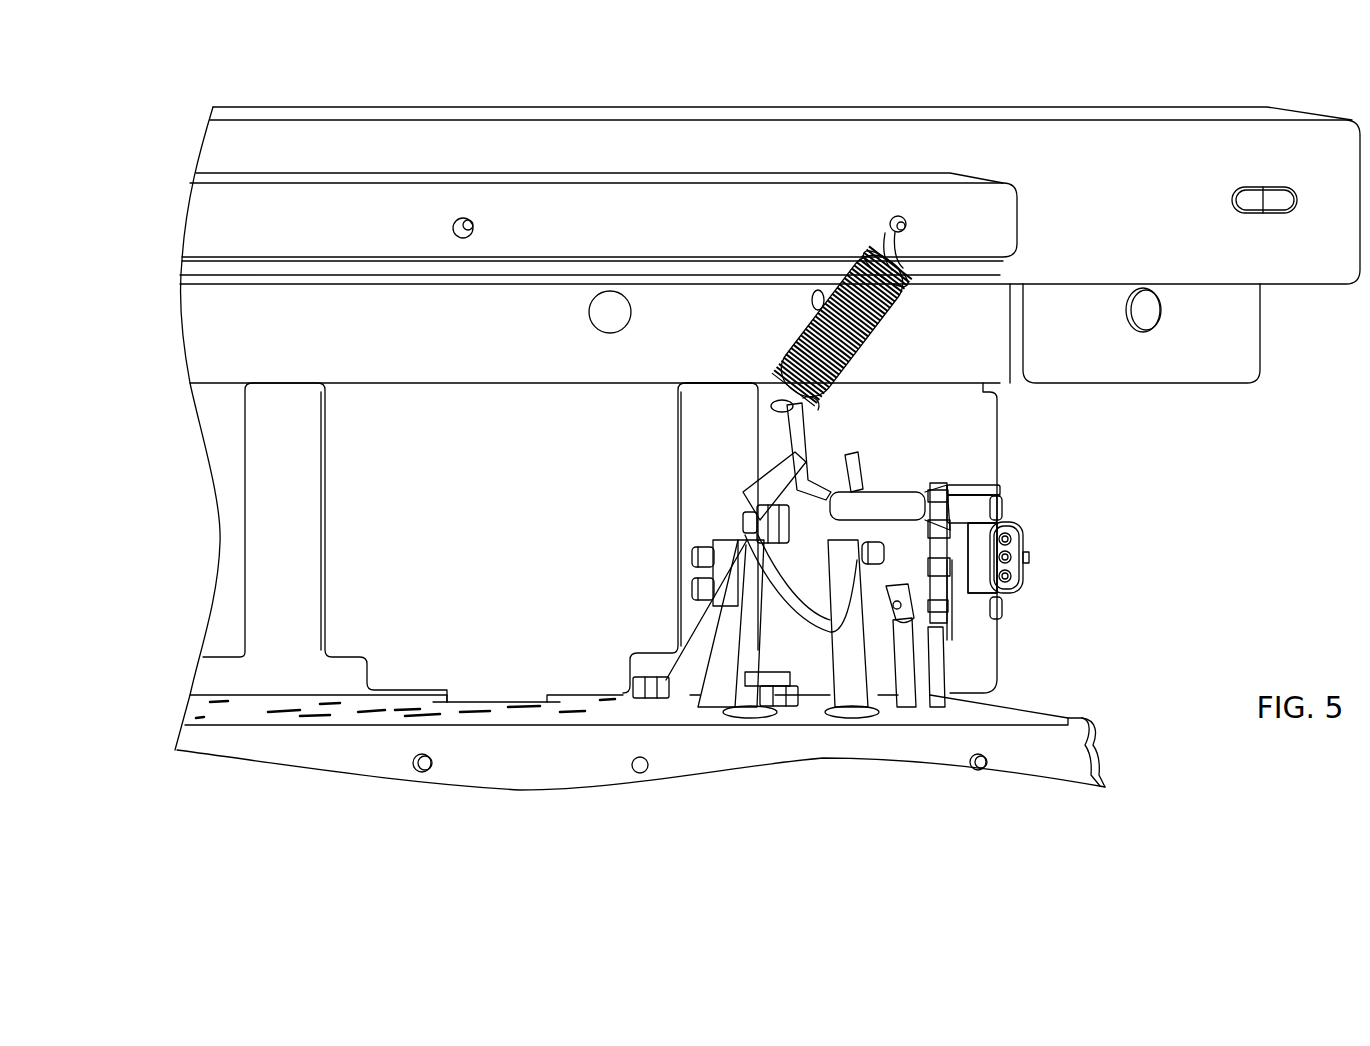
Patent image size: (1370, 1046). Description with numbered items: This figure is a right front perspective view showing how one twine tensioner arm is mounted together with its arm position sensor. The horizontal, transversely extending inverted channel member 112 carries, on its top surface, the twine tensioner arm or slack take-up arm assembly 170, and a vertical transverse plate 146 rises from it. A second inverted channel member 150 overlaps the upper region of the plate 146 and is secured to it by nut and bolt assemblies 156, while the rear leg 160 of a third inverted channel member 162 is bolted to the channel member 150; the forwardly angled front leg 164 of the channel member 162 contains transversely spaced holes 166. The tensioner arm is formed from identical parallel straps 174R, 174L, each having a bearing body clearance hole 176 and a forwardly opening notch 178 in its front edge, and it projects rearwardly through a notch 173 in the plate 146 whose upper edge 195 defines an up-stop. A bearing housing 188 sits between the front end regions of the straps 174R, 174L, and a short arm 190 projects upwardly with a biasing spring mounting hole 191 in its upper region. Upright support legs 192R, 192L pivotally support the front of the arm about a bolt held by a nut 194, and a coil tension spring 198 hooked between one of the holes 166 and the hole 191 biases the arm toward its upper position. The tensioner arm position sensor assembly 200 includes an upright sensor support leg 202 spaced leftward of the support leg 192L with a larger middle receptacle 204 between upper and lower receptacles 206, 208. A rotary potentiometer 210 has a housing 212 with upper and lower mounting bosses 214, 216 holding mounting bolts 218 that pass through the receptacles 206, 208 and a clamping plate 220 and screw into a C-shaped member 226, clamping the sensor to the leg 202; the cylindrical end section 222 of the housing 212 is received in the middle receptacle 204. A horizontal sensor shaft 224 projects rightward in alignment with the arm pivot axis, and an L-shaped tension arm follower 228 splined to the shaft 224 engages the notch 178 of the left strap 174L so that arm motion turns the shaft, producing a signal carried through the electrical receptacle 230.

The inverted channel member 112 is at (503, 686).
The vertical transverse plate 146 is at (436, 502).
The second inverted channel member 150 is at (672, 98).
The nut and bolt assemblies 156 is at (812, 301).
The rear leg 160 is at (352, 282).
The third inverted channel member 162 is at (753, 160).
The front leg 164 is at (545, 270).
The holes 166 is at (472, 220).
The tensioner arm assembly 170 is at (705, 515).
The notch 173 is at (322, 563).
The right strap 174R is at (712, 670).
The left strap 174L is at (757, 670).
The bearing body clearance hole 176 is at (735, 603).
The forwardly opening notch 178 is at (880, 498).
The bearing housing 188 is at (803, 660).
The short arm 190 is at (806, 434).
The biasing spring mounting hole 191 is at (782, 418).
The right support leg 192R is at (700, 665).
The left support leg 192L is at (832, 660).
The nut 194 is at (720, 568).
The upper edge 195 is at (708, 398).
The coil tension spring 198 is at (779, 344).
The tensioner arm position sensor assembly 200 is at (1068, 561).
The sensor support leg 202 is at (933, 665).
The middle receptacle 204 is at (1003, 600).
The upper receptacle 206 is at (1003, 498).
The lower receptacle 208 is at (913, 660).
The rotary potentiometer 210 is at (985, 645).
The housing 212 is at (1010, 518).
The upper mounting boss 214 is at (1003, 486).
The lower mounting boss 216 is at (995, 636).
The mounting bolt 218 is at (1003, 507).
The clamping plate 220 is at (993, 483).
The cylindrical end section 222 is at (945, 560).
The sensor shaft 224 is at (868, 660).
The C-shaped member 226 is at (892, 660).
The L-shaped tension arm follower 228 is at (936, 482).
The electrical receptacle 230 is at (1007, 573).